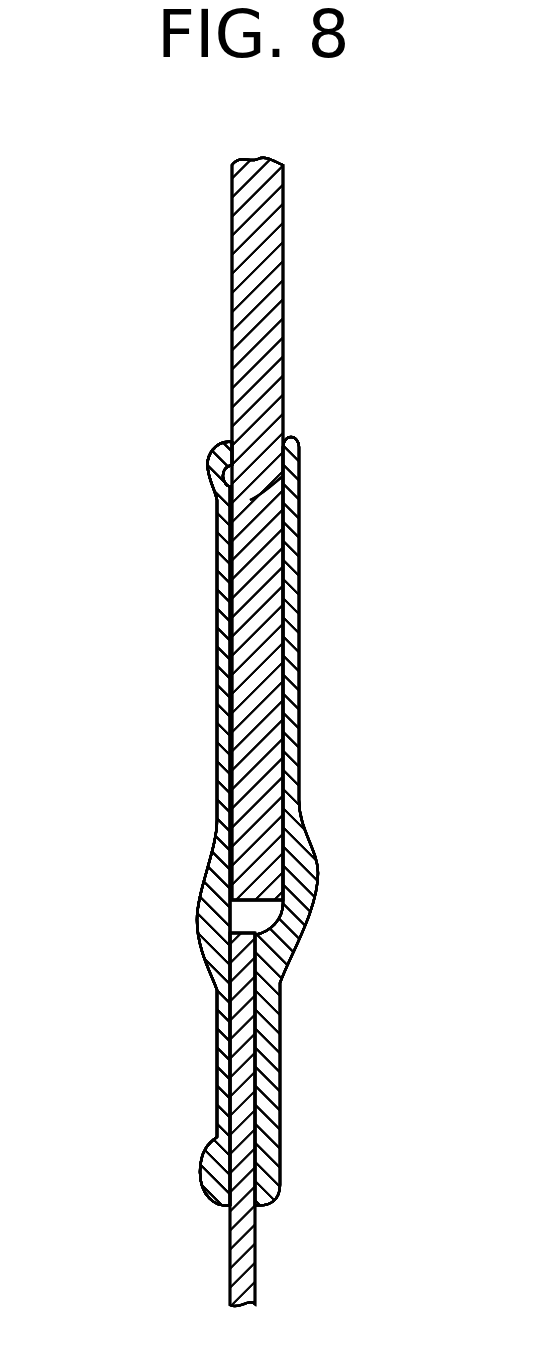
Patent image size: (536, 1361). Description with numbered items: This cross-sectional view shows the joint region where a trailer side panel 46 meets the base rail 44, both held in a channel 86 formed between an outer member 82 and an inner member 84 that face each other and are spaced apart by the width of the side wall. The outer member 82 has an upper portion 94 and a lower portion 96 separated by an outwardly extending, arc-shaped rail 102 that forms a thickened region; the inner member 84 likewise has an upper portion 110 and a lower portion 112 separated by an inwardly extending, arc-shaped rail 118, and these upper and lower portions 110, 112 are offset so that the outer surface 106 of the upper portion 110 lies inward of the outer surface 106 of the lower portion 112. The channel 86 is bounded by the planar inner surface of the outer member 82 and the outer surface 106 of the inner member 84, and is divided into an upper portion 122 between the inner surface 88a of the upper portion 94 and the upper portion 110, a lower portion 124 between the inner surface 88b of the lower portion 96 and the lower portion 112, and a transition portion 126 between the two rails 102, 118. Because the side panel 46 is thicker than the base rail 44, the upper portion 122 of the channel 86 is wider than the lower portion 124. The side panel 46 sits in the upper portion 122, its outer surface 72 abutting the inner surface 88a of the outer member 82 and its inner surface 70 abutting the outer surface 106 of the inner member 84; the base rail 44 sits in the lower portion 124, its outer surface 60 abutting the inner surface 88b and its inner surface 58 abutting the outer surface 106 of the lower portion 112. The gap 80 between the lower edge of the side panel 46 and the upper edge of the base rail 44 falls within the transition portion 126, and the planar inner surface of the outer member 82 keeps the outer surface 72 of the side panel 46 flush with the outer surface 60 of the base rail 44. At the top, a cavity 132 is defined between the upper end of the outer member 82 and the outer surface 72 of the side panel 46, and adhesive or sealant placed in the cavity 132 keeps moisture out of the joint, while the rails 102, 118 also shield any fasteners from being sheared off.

The base rail 44 is at (233, 1271).
The side panel 46 is at (250, 354).
The inner surface 58 is at (255, 1240).
The outer surface 60 is at (232, 1221).
The inner surface 70 is at (283, 362).
The outer surface 72 is at (232, 288).
The gap 80 is at (263, 910).
The outer member 82 is at (228, 640).
The inner member 84 is at (290, 642).
The channel 86 is at (242, 790).
The inner surface 88a is at (252, 524).
The inner surface 88b is at (240, 1135).
The upper portion 94 is at (222, 580).
The lower portion 96 is at (222, 1062).
The rail 102 is at (212, 872).
The outer surface 106 is at (225, 468).
The upper portion 110 is at (290, 580).
The lower portion 112 is at (263, 1147).
The rail 118 is at (310, 866).
The upper portion 122 is at (245, 703).
The lower portion 124 is at (237, 1095).
The transition portion 126 is at (248, 918).
The cavity 132 is at (292, 432).